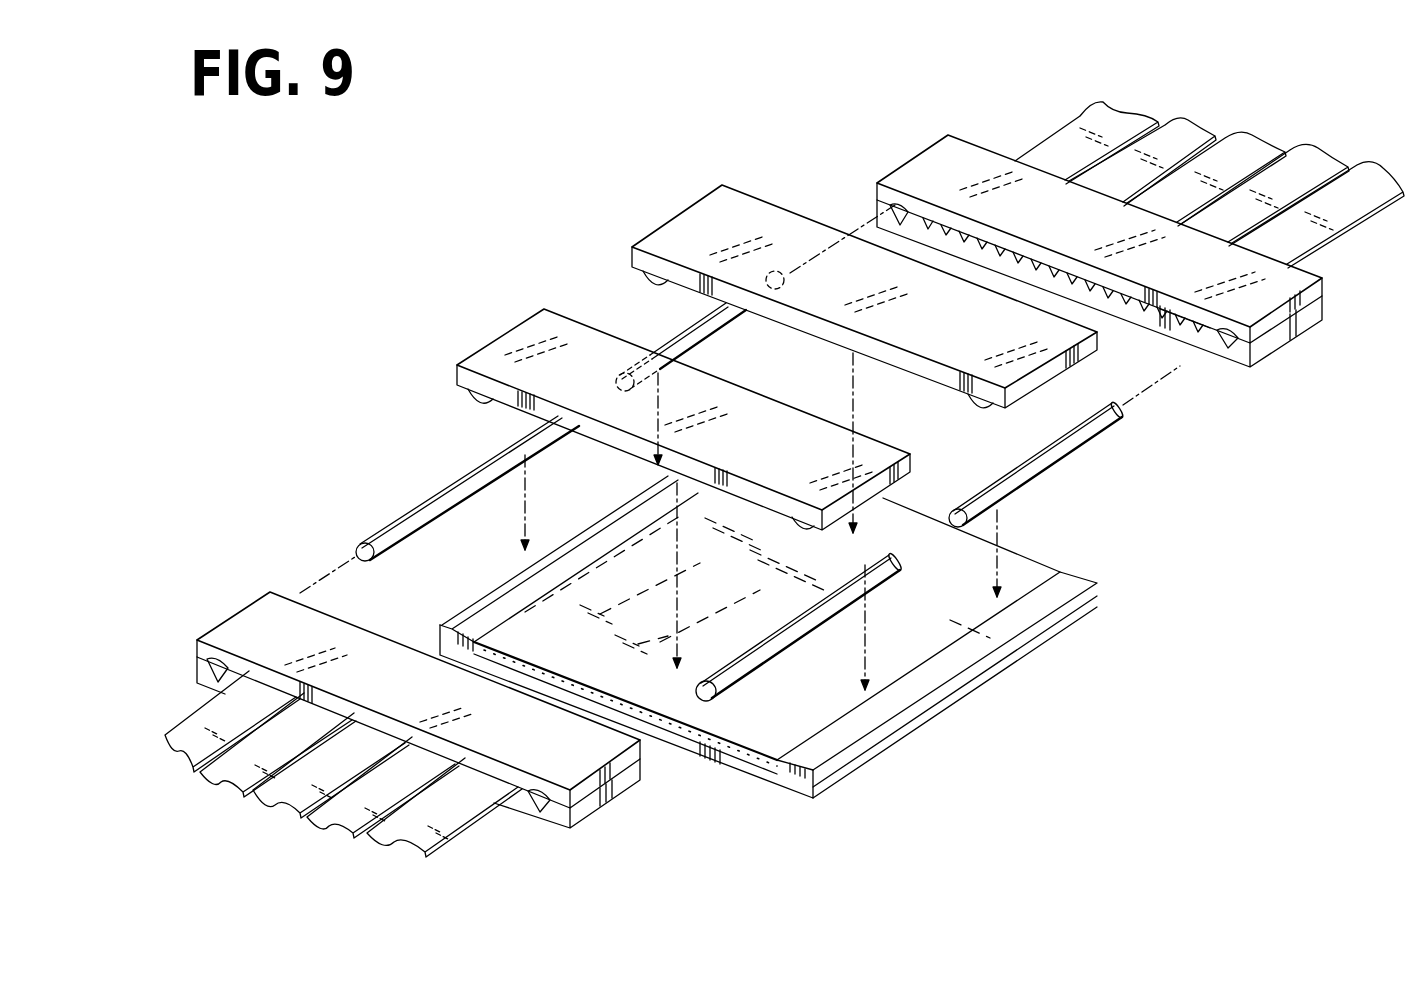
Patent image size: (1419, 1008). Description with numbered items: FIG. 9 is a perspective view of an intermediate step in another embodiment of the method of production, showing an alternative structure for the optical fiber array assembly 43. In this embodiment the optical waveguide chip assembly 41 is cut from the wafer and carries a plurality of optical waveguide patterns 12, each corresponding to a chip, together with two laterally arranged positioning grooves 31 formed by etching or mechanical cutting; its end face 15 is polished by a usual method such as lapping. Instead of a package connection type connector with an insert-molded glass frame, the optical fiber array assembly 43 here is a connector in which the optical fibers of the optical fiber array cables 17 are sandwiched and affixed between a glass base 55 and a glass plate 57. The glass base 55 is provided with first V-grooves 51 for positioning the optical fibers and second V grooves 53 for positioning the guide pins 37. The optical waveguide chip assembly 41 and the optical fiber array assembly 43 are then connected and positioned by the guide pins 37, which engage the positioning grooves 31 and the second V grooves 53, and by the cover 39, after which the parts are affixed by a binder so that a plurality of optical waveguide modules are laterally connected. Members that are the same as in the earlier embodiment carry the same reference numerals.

The optical waveguide patterns 12 is at (622, 640).
The end face 15 is at (704, 657).
The optical fiber array cables 17 is at (1117, 177).
The positioning grooves 31 is at (477, 617).
The guide pins 37 is at (687, 337).
The cover 39 is at (717, 220).
The optical waveguide chip assembly 41 is at (910, 628).
The optical fiber array assembly 43 is at (769, 491).
The first V-grooves 51 is at (1186, 328).
The second V grooves 53 is at (903, 197).
The glass base 55 is at (1238, 353).
The glass plate 57 is at (940, 167).